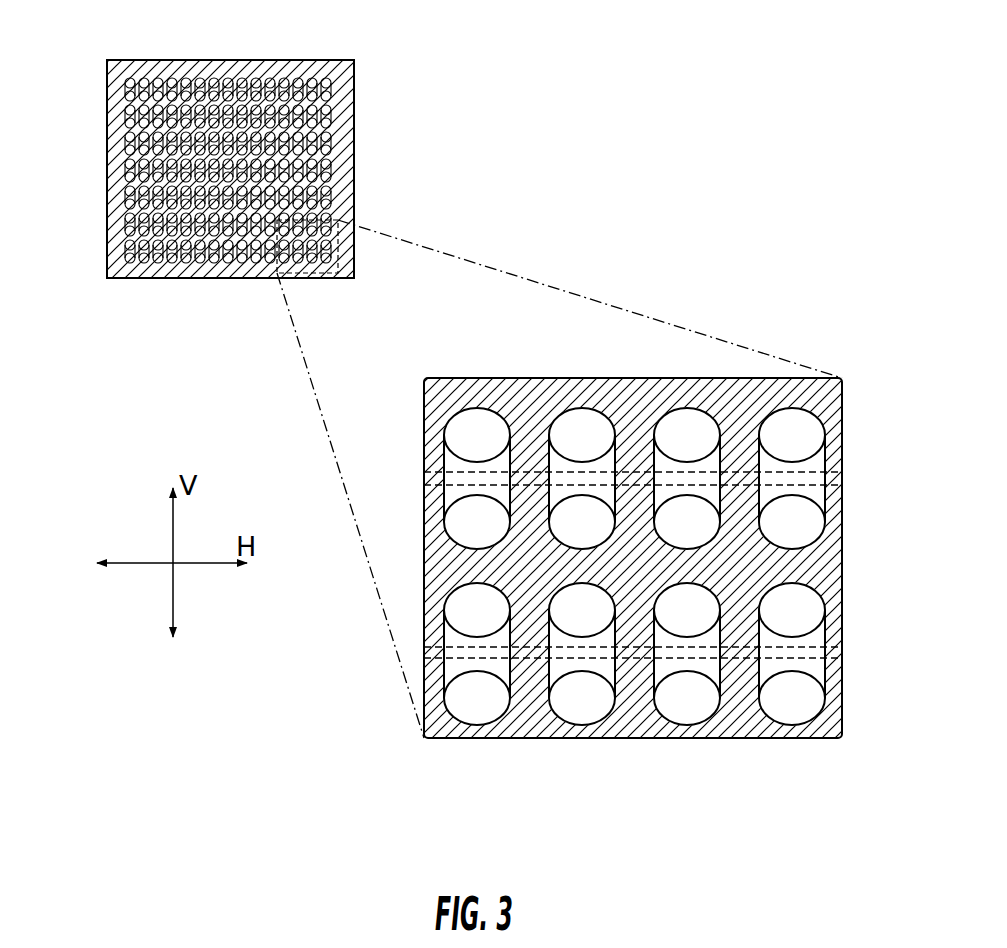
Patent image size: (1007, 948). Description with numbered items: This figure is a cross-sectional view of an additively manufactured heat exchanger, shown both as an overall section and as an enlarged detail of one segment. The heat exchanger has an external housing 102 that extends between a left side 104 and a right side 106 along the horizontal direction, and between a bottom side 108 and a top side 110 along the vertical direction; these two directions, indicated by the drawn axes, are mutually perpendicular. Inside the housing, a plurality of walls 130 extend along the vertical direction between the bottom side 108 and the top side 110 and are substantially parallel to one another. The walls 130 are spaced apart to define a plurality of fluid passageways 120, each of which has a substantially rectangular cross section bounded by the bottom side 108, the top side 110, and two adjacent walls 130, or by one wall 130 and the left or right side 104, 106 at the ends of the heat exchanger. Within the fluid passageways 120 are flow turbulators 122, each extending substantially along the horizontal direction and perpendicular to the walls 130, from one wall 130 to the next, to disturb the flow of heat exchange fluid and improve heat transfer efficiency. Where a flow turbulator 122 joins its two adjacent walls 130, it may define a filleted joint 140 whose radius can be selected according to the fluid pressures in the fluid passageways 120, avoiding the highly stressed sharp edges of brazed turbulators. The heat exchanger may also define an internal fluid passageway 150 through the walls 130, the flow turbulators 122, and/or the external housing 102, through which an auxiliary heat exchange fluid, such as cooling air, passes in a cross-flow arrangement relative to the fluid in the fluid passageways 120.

The external housing 102 is at (303, 60).
The left side 104 is at (105, 152).
The right side 106 is at (357, 170).
The bottom side 108 is at (184, 281).
The top side 110 is at (224, 55).
The fluid passageways 120 is at (580, 699).
The flow turbulators 122 is at (607, 462).
The walls 130 is at (740, 673).
The filleted joint 140 is at (822, 517).
The internal fluid passageway 150 is at (842, 651).